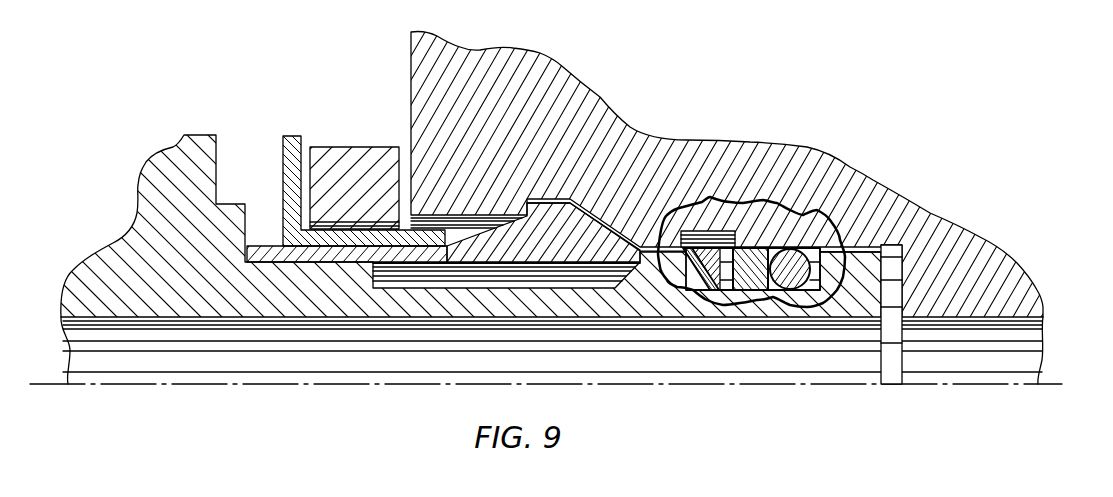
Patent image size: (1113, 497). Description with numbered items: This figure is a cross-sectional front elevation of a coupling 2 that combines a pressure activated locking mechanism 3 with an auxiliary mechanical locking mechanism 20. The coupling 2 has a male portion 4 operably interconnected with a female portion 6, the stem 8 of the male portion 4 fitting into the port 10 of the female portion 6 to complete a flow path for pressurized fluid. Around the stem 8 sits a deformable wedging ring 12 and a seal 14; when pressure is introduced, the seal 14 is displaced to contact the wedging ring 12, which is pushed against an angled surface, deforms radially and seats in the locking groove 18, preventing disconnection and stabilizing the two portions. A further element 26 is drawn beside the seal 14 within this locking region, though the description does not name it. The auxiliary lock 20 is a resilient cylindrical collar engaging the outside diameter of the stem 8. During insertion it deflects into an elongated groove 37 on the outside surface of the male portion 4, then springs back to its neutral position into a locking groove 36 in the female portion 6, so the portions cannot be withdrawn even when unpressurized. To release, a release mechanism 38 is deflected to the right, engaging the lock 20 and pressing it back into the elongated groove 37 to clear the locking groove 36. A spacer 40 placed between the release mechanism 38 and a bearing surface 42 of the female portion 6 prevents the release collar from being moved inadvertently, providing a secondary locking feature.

The coupling 2 is at (167, 96).
The pressure activated locking mechanism 3 is at (845, 198).
The male portion 4 is at (143, 173).
The female portion 6 is at (990, 246).
The stem 8 is at (837, 335).
The port 10 is at (893, 275).
The wedging ring 12 is at (697, 290).
The seal 14 is at (786, 250).
The locking groove 18 is at (713, 231).
The auxiliary mechanical locking mechanism 20 is at (272, 246).
The support ring 26 is at (750, 248).
The locking groove 36 is at (572, 184).
The elongated groove 37 is at (588, 278).
The release mechanism 38 is at (291, 135).
The spacer 40 is at (366, 147).
The bearing surface 42 is at (411, 78).